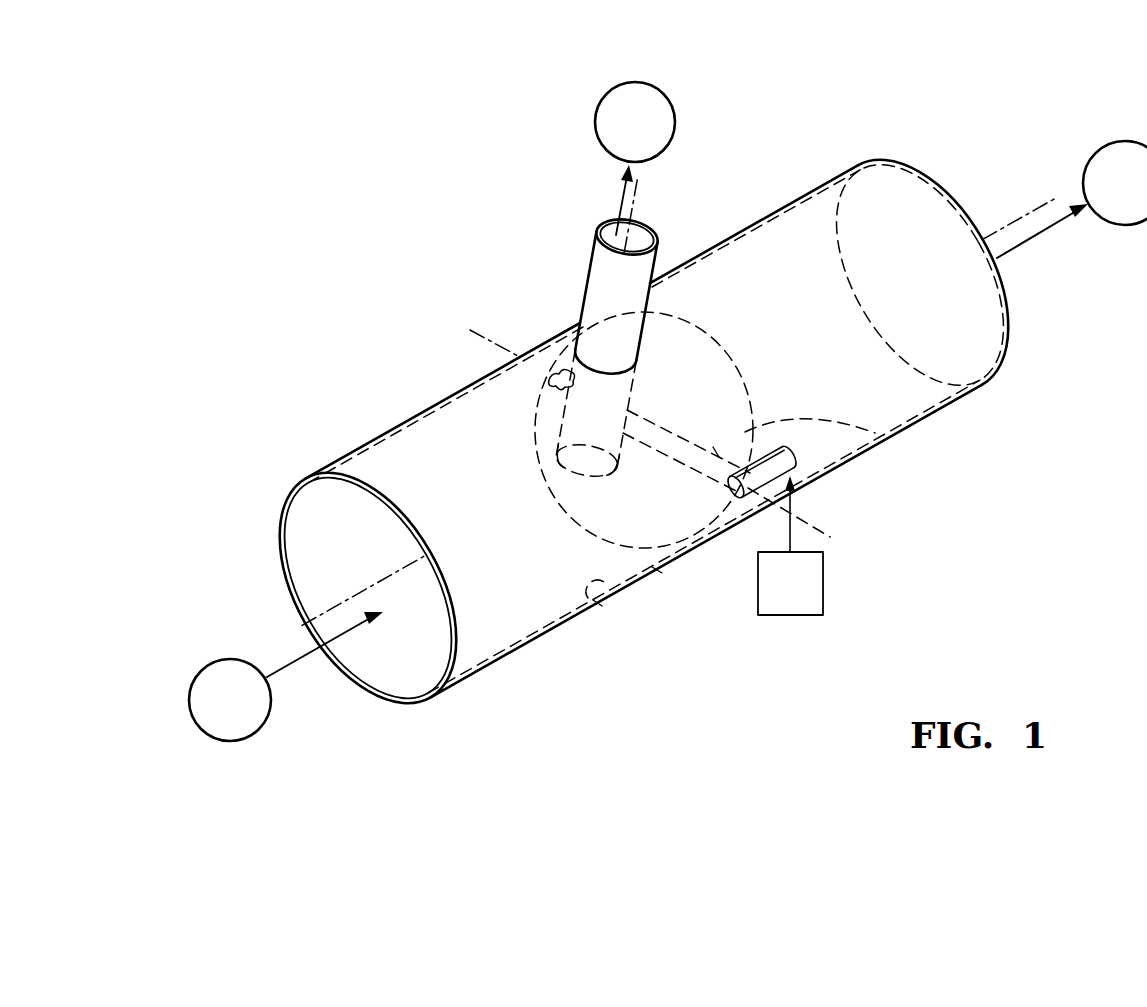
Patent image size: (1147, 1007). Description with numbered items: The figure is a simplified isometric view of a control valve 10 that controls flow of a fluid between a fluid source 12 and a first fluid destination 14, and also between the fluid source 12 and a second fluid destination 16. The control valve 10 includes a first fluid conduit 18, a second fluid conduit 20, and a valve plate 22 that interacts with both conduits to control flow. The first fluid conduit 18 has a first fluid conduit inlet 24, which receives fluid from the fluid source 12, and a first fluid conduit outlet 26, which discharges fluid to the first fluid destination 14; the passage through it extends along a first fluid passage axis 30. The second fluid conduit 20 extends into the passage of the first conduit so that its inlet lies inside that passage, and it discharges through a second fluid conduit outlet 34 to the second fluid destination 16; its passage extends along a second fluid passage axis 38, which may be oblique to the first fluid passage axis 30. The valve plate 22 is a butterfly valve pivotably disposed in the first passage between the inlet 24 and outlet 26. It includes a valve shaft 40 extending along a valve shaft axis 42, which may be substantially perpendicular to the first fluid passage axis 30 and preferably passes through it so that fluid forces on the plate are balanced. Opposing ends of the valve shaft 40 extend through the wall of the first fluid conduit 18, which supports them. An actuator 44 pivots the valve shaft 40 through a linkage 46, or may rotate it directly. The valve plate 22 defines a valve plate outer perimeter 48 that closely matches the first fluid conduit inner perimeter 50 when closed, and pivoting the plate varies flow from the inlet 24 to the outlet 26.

The control valve 10 is at (285, 183).
The fluid source 12 is at (286, 676).
The first fluid destination 14 is at (1072, 199).
The second fluid destination 16 is at (635, 122).
The first fluid conduit 18 is at (530, 642).
The second fluid conduit 20 is at (590, 268).
The valve plate 22 is at (539, 441).
The first fluid conduit inlet 24 is at (330, 547).
The first fluid conduit outlet 26 is at (948, 188).
The first fluid passage axis 30 is at (299, 632).
The second fluid conduit outlet 34 is at (640, 235).
The second fluid passage axis 38 is at (640, 185).
The valve shaft 40 is at (875, 433).
The valve shaft axis 42 is at (823, 533).
The actuator 44 is at (790, 545).
The linkage 46 is at (845, 455).
The valve plate outer perimeter 48 is at (660, 567).
The first fluid conduit inner perimeter 50 is at (598, 603).